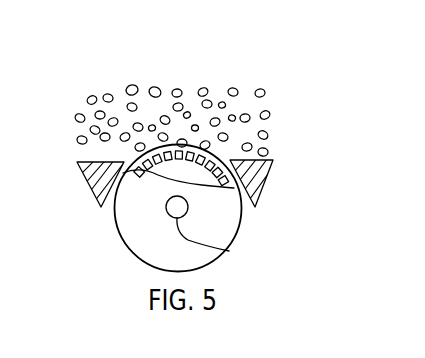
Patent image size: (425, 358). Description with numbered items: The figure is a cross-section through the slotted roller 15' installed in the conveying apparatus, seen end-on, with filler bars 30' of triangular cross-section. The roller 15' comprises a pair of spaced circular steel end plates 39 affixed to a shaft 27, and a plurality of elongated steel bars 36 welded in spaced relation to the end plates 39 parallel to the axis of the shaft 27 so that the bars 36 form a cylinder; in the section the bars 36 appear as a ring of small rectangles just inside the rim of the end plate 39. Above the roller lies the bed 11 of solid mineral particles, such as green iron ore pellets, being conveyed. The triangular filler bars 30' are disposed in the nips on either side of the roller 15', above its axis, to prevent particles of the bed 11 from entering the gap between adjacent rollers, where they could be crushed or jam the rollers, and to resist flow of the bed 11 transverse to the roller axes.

The bed 11 is at (217, 88).
The filler bars 30' is at (174, 184).
The roller 15' is at (197, 208).
The elongated steel bars 36 is at (153, 163).
The circular steel end plates 39 is at (143, 252).
The shaft 27 is at (205, 233).